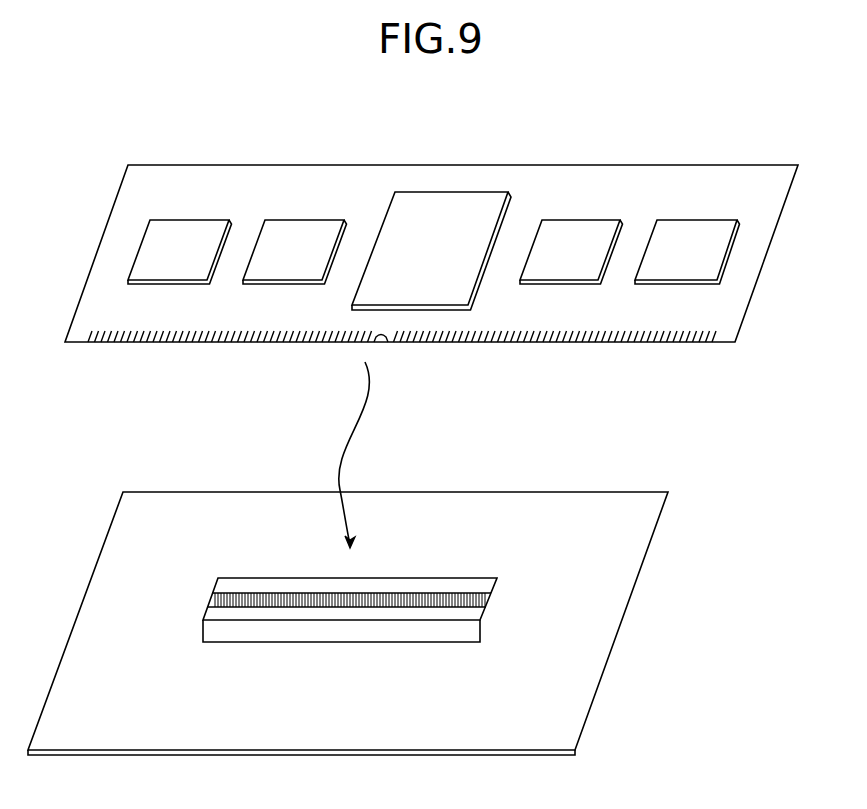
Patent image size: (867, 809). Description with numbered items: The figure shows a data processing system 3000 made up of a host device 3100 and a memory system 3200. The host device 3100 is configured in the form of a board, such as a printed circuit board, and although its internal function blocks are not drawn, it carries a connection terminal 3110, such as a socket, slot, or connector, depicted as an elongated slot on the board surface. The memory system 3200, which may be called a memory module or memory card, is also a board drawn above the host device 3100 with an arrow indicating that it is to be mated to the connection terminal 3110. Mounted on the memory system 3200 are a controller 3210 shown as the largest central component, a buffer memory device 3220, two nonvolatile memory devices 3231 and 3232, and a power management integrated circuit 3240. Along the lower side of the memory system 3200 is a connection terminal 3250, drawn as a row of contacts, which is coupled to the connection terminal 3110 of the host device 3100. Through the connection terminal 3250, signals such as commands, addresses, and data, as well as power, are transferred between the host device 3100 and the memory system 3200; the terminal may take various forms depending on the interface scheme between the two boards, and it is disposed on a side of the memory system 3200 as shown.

The data processing system 3000 is at (250, 122).
The memory system 3200 is at (431, 253).
The connection terminal 3250 is at (108, 342).
The power management integrated circuit 3240 is at (180, 252).
The buffer memory device 3220 is at (295, 252).
The controller 3210 is at (431, 251).
The nonvolatile memory device 3231 is at (571, 252).
The nonvolatile memory device 3232 is at (687, 252).
The host device 3100 is at (348, 623).
The connection terminal 3110 is at (496, 594).